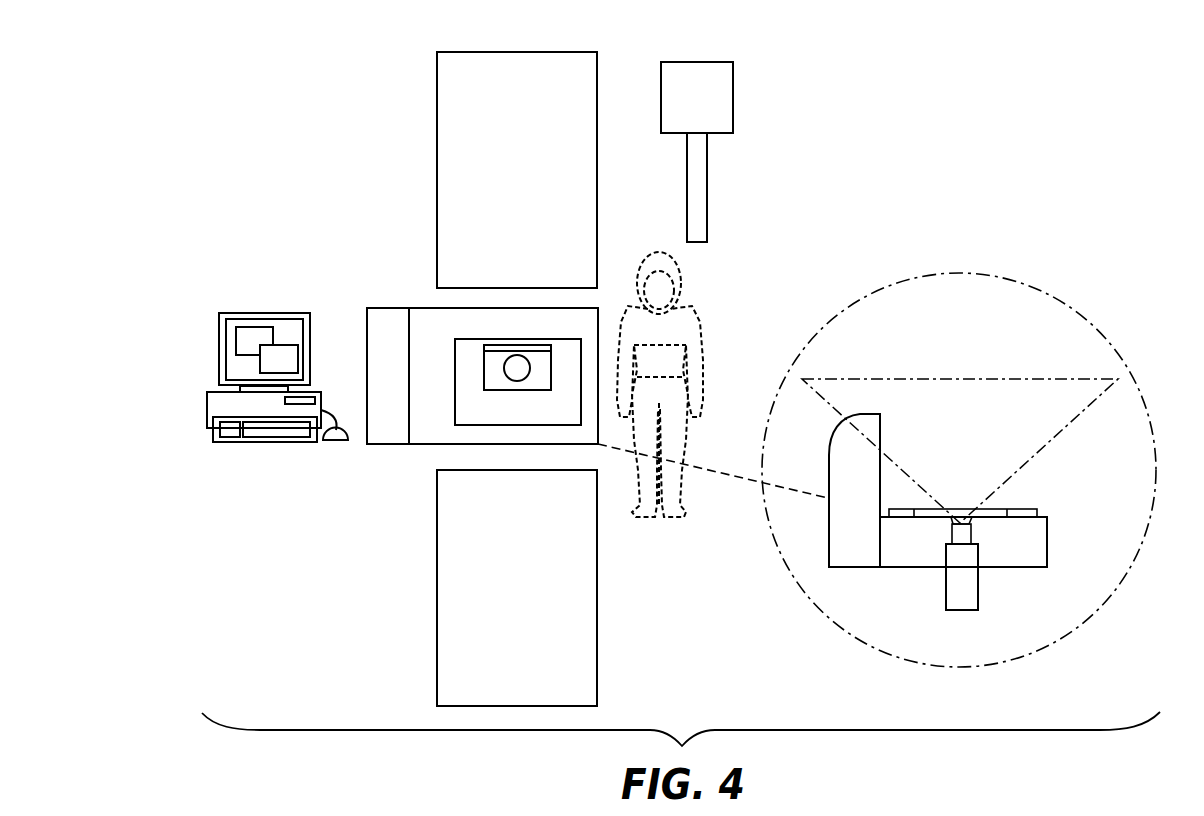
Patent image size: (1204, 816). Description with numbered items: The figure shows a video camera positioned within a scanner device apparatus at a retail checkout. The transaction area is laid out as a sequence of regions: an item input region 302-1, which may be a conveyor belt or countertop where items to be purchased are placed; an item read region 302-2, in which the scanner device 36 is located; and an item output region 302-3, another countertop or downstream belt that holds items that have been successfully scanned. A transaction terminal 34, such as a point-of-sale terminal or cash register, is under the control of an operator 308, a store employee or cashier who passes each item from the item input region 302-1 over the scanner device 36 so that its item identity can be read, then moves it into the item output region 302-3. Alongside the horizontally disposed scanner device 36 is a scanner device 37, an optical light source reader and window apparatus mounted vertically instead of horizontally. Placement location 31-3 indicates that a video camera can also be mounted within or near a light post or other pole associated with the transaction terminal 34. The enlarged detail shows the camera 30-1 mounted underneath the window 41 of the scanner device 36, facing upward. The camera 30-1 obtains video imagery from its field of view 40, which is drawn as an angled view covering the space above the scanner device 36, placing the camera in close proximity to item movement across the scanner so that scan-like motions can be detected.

The item input region 302-1 is at (590, 80).
The item read region 302-2 is at (586, 334).
The item output region 302-3 is at (589, 672).
The placement location 31-3 is at (719, 102).
The transaction terminal 34 is at (254, 312).
The video camera 30-1 is at (492, 358).
The scanner device 36 is at (574, 422).
The scanner device 37 is at (402, 439).
The operator 308 is at (679, 364).
The field of view 40 is at (1075, 405).
The window 41 is at (1010, 502).